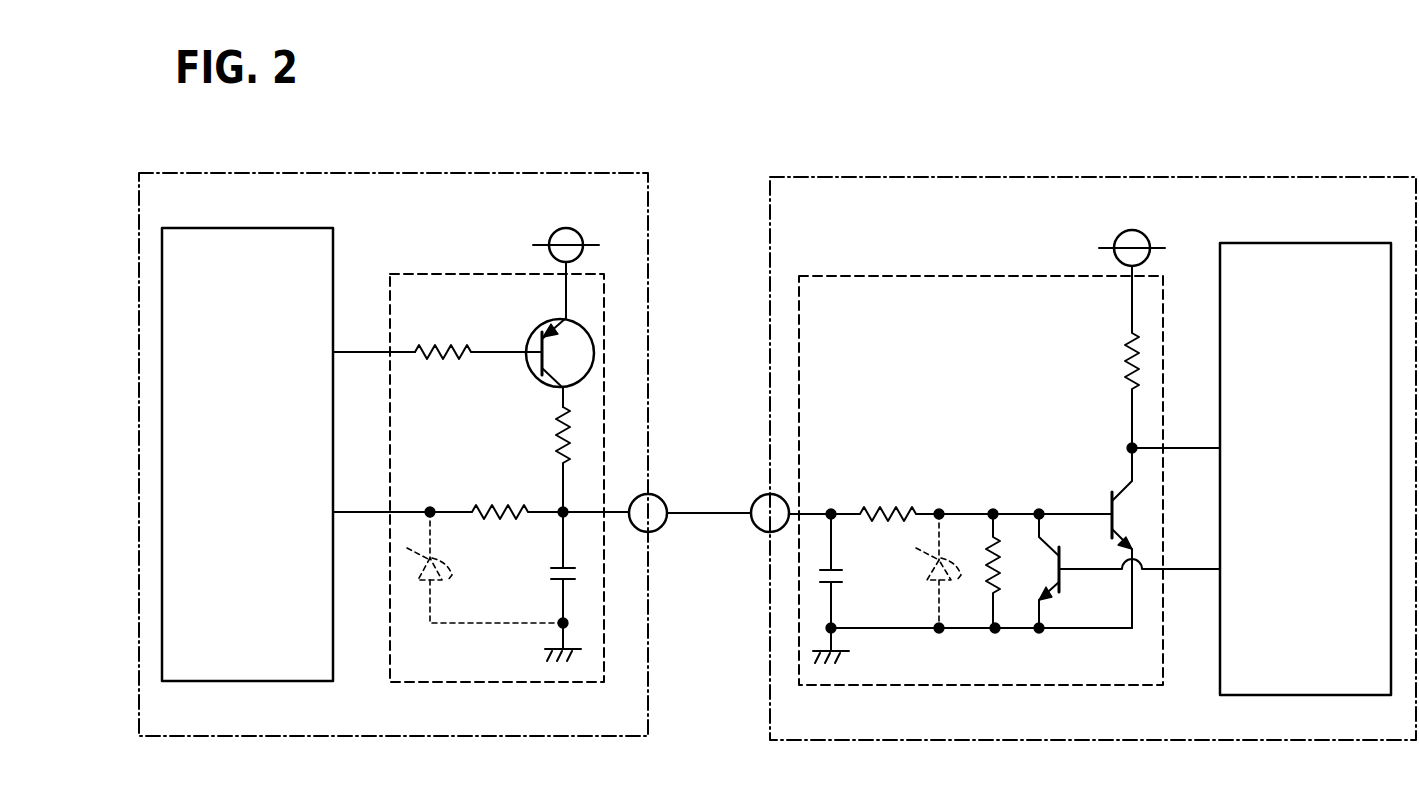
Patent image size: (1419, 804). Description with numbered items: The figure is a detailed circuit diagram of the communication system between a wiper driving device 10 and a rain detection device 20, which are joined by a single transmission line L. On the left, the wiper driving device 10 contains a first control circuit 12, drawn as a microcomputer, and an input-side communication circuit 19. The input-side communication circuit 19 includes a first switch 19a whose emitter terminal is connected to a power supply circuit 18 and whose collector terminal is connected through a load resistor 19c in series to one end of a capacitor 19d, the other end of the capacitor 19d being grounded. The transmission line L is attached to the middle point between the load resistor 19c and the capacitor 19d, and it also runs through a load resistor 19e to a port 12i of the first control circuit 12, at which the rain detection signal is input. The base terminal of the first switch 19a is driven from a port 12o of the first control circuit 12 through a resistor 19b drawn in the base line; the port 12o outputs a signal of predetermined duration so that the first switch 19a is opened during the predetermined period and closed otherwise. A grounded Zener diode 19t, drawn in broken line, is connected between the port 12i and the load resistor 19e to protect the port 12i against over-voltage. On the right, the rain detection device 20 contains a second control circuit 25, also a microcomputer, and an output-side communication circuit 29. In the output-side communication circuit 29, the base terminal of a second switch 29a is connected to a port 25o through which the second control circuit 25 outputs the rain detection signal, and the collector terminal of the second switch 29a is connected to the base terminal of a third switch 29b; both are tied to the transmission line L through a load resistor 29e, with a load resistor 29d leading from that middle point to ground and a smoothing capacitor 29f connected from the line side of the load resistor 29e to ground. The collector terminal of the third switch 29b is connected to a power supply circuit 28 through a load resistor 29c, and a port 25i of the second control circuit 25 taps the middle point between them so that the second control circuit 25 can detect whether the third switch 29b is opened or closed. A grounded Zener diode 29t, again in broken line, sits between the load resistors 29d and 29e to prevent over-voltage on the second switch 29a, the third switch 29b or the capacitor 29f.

The wiper driving device 10 is at (522, 173).
The first control circuit 12 is at (252, 228).
The port 12o is at (357, 351).
The port 12i is at (357, 511).
The power supply circuit 18 is at (556, 240).
The input-side communication circuit 19 is at (416, 274).
The first switch 19a is at (552, 330).
The resistor 19b is at (450, 344).
The load resistor 19c is at (562, 432).
The capacitor 19d is at (556, 566).
The load resistor 19e is at (502, 504).
The Zener diode 19t is at (440, 575).
The transmission line L is at (726, 513).
The rain detection device 20 is at (1238, 177).
The second control circuit 25 is at (1308, 243).
The port 25i is at (1188, 447).
The port 25o is at (1188, 568).
The power supply circuit 28 is at (1122, 241).
The output-side communication circuit 29 is at (872, 276).
The second switch 29a is at (1058, 520).
The third switch 29b is at (1108, 512).
The load resistor 29c is at (1131, 346).
The load resistor 29d is at (1010, 516).
The load resistor 29e is at (878, 506).
The smoothing capacitor 29f is at (836, 558).
The Zener diode 29t is at (927, 580).